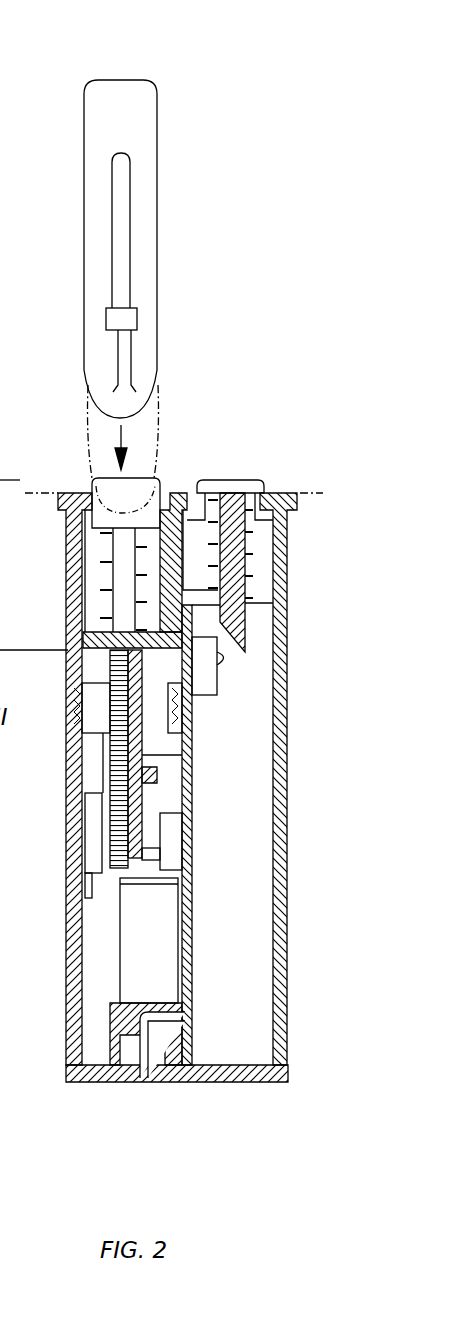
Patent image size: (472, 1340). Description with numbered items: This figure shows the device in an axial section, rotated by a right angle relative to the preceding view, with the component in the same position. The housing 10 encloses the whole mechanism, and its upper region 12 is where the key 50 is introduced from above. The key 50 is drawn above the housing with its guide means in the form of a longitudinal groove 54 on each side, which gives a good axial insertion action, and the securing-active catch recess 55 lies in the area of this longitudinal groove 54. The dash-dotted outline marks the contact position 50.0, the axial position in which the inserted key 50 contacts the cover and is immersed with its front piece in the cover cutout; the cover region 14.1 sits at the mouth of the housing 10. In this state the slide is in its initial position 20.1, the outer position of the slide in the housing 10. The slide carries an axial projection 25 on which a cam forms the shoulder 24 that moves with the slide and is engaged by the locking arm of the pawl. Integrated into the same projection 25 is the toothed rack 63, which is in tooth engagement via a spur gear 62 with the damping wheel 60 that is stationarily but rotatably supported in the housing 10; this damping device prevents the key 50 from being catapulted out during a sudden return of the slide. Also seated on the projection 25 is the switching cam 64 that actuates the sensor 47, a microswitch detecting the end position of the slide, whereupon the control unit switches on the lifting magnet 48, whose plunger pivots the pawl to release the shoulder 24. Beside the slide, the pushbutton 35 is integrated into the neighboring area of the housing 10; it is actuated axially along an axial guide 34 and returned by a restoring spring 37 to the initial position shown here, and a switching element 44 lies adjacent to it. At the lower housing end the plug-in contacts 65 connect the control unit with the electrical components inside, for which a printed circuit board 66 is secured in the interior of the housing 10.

The housing 10 is at (55, 1068).
The housing top / front face 12 is at (332, 488).
The socket cup 14.1 is at (4, 478).
The initial position of the slide 20.1 is at (53, 647).
The shoulder 24 is at (140, 795).
The axial projection 25 is at (168, 784).
The axial guide 34 is at (262, 602).
The pushbutton 35 is at (247, 476).
The restoring spring 37 is at (250, 535).
The switch block 44 is at (207, 665).
The sensor 47 is at (174, 836).
The lifting magnet 48 is at (150, 918).
The key 50 is at (160, 78).
The contact position of the key 50.0 is at (162, 424).
The longitudinal groove 54 is at (122, 196).
The catch recess 55 is at (127, 322).
The damping wheel 60 is at (92, 830).
The spur gear 62 is at (90, 893).
The toothed rack 63 is at (108, 756).
The switching cam 64 is at (152, 860).
The plug-in contacts 65 is at (145, 1078).
The printed circuit board 66 is at (186, 983).